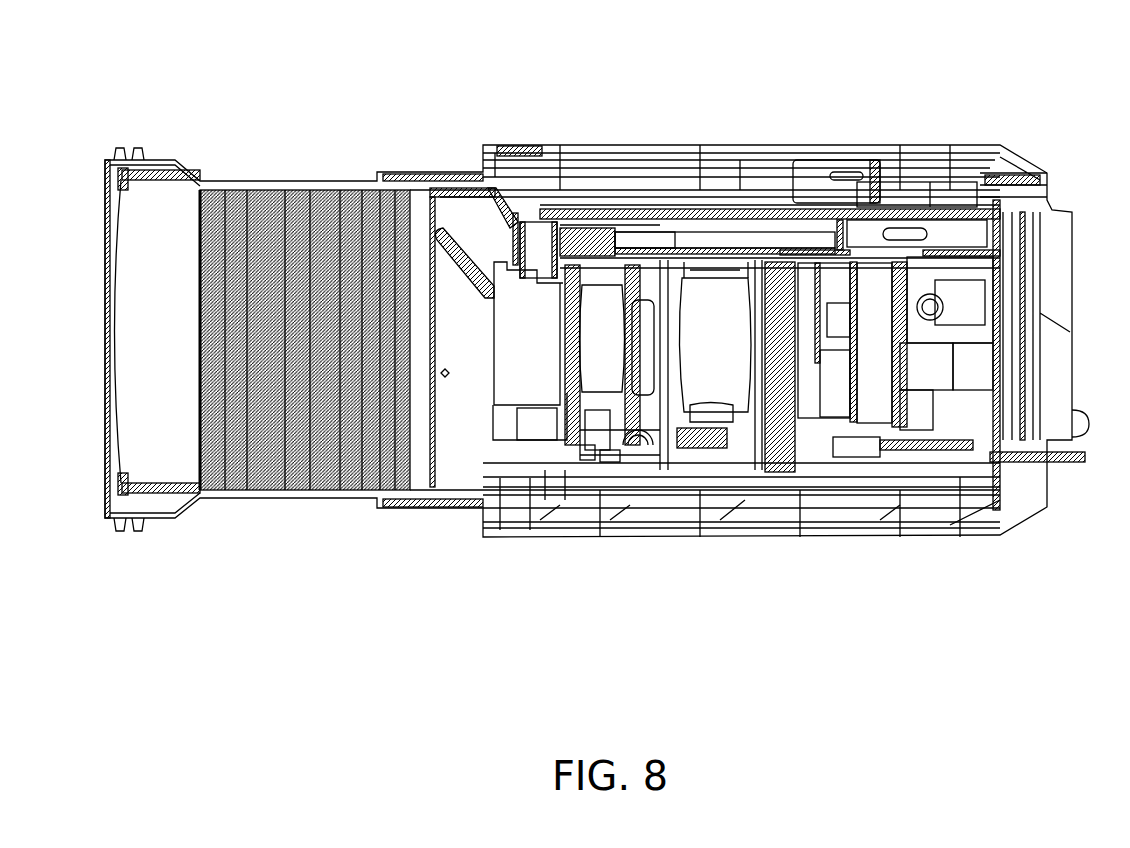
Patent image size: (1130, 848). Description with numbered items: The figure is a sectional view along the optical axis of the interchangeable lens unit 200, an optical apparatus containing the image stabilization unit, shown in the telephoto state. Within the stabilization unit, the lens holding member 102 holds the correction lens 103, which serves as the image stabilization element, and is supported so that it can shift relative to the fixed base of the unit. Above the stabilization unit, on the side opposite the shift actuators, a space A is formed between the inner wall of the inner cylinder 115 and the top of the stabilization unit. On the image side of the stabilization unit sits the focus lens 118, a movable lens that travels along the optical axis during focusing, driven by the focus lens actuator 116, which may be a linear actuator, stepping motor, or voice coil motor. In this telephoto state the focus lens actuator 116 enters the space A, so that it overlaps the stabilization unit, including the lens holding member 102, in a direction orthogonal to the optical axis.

The interchangeable lens unit 200 is at (685, 109).
The lens holding member 102 is at (625, 278).
The correction lens 103 is at (640, 352).
The inner cylinder 115 is at (592, 218).
The focus lens actuator 116 is at (790, 230).
The focus lens 118 is at (777, 392).
The space A is at (645, 231).